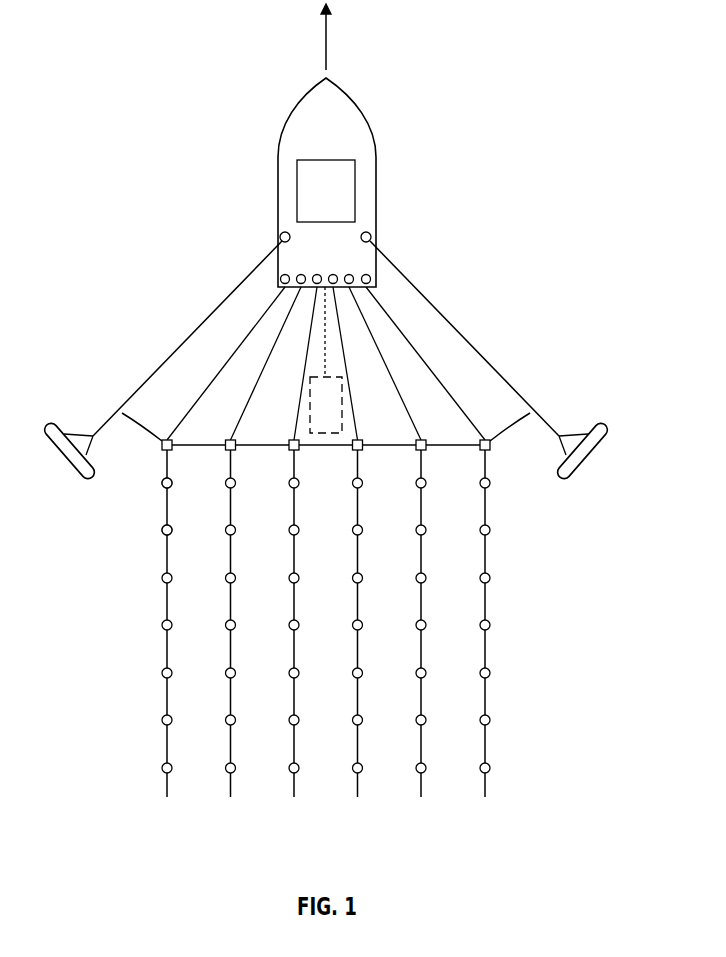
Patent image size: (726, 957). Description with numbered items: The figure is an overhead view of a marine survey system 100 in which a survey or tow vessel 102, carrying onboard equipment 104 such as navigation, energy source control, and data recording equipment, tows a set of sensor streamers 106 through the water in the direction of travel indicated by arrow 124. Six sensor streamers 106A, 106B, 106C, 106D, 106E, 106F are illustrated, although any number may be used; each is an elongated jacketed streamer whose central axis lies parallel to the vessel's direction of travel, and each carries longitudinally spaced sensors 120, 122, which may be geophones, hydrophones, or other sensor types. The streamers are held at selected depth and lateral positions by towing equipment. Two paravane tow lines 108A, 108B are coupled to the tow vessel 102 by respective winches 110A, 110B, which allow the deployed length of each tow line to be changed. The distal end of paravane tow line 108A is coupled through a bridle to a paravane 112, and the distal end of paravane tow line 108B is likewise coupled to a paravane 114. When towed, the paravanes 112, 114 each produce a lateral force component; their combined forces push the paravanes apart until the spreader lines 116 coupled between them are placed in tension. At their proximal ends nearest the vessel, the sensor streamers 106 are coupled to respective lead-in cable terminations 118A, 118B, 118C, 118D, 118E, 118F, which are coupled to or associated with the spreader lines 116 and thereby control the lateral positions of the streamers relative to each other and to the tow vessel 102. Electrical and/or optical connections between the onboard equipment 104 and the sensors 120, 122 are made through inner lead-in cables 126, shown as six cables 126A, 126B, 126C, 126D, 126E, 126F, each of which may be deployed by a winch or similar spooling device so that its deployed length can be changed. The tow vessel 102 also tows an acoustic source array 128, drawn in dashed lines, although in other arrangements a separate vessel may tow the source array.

The marine survey system 100 is at (105, 78).
The tow vessel 102 is at (293, 116).
The onboard equipment 104 is at (357, 182).
The sensor streamers 106 is at (136, 761).
The sensor streamer 106A is at (167, 790).
The sensor streamer 106B is at (230, 790).
The sensor streamer 106C is at (294, 790).
The sensor streamer 106D is at (358, 790).
The sensor streamer 106E is at (421, 790).
The sensor streamer 106F is at (485, 790).
The paravane tow line 108A is at (231, 296).
The paravane tow line 108B is at (423, 296).
The winch 110A is at (280, 238).
The winch 110B is at (372, 238).
The paravane 112 is at (57, 452).
The paravane 114 is at (590, 459).
The spreader lines 116 is at (210, 445).
The lead-in cable termination 118A is at (163, 450).
The lead-in cable termination 118B is at (229, 452).
The lead-in cable termination 118C is at (292, 452).
The lead-in cable termination 118D is at (359, 452).
The lead-in cable termination 118E is at (423, 452).
The lead-in cable termination 118F is at (490, 450).
The sensor 120 is at (162, 485).
The sensor 122 is at (162, 532).
The arrow 124 is at (327, 43).
The inner lead-in cables 126 is at (136, 299).
The inner lead-in cable 126A is at (243, 338).
The inner lead-in cable 126B is at (257, 378).
The inner lead-in cable 126C is at (296, 427).
The inner lead-in cable 126D is at (356, 427).
The inner lead-in cable 126E is at (395, 378).
The inner lead-in cable 126F is at (409, 338).
The acoustic source array 128 is at (330, 434).